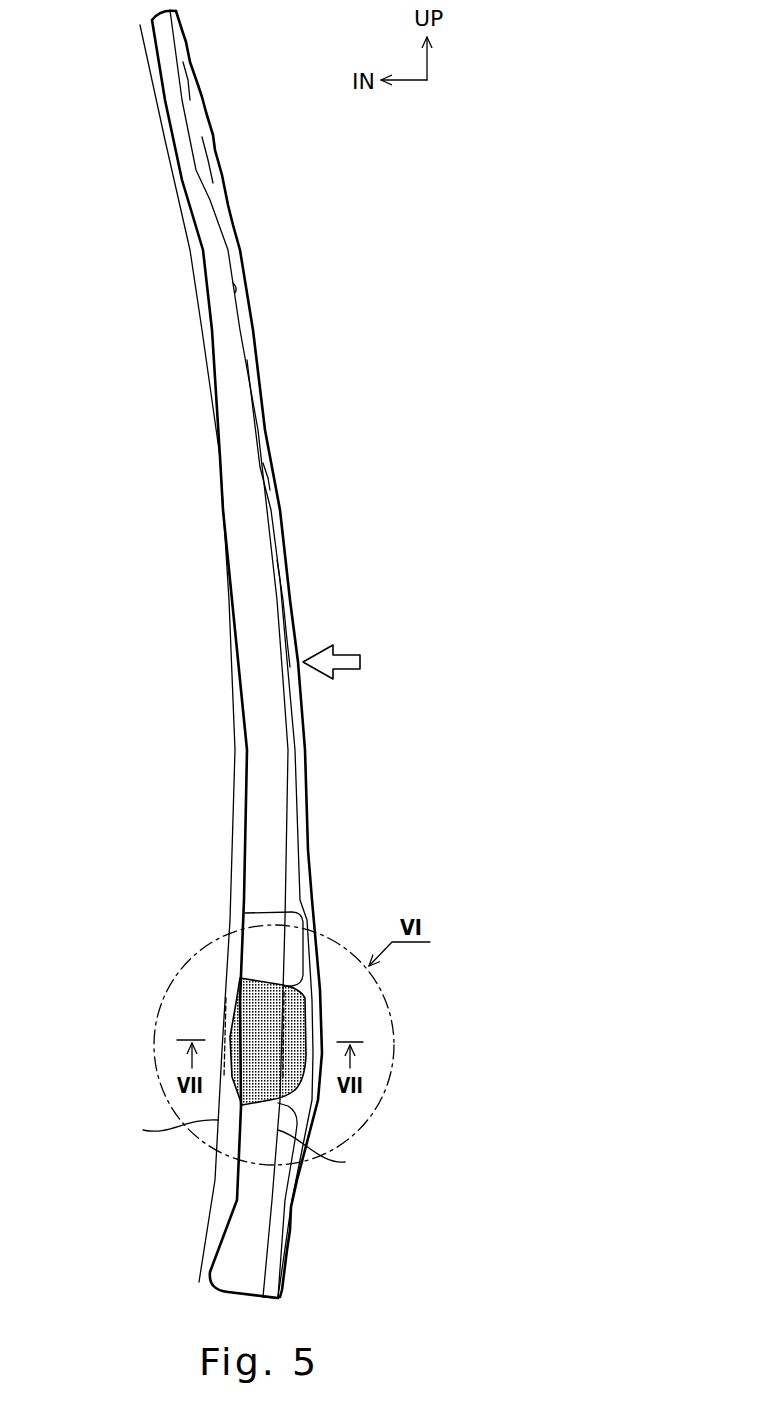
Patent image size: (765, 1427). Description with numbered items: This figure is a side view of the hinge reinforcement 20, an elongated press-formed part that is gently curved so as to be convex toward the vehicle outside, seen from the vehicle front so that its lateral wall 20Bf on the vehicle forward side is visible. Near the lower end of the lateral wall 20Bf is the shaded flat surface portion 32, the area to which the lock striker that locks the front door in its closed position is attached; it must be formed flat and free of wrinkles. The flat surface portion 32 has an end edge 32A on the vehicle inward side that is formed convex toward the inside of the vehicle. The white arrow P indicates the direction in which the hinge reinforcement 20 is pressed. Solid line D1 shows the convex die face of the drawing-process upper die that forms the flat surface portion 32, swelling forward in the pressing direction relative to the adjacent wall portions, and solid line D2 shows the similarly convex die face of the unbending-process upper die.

The hinge reinforcement 20 is at (290, 654).
The lateral wall on the vehicle forward side 20Bf is at (289, 530).
The flat surface portion 32 is at (253, 1018).
The end edge 32A is at (233, 1037).
The die face form of the drawing-process upper die D1 is at (329, 1153).
The die face form of the unbending-process upper die D2 is at (165, 1131).
The pressing direction arrow P is at (341, 662).